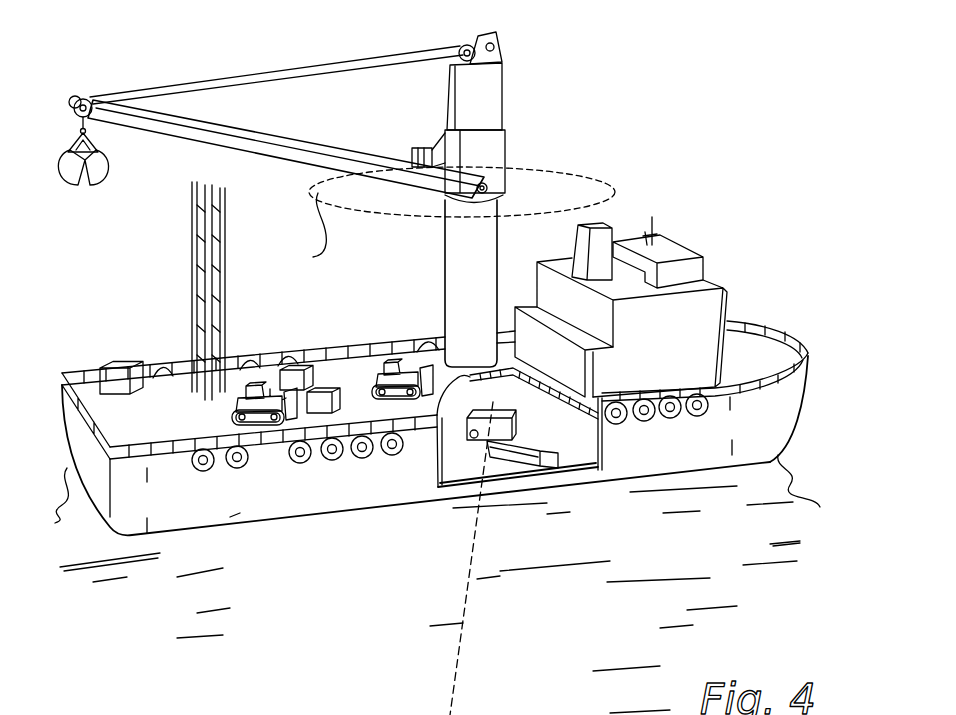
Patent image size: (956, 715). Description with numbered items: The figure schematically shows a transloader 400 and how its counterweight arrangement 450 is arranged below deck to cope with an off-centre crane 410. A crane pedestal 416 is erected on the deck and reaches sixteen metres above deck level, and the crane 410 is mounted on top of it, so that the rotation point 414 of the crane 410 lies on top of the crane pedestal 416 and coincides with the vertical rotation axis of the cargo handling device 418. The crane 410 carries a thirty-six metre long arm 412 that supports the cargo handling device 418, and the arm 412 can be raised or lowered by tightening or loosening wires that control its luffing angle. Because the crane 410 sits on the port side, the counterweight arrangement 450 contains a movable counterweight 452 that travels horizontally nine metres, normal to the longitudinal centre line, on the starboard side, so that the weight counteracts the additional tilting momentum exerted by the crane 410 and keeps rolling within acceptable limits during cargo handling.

The transloader 400 is at (740, 205).
The crane 410 is at (347, 199).
The arm 412 is at (323, 168).
The rotation point 414 is at (505, 190).
The crane pedestal 416 is at (457, 273).
The cargo handling device 418 is at (70, 188).
The counterweight arrangement 450 is at (478, 460).
The counterweight 452 is at (497, 410).